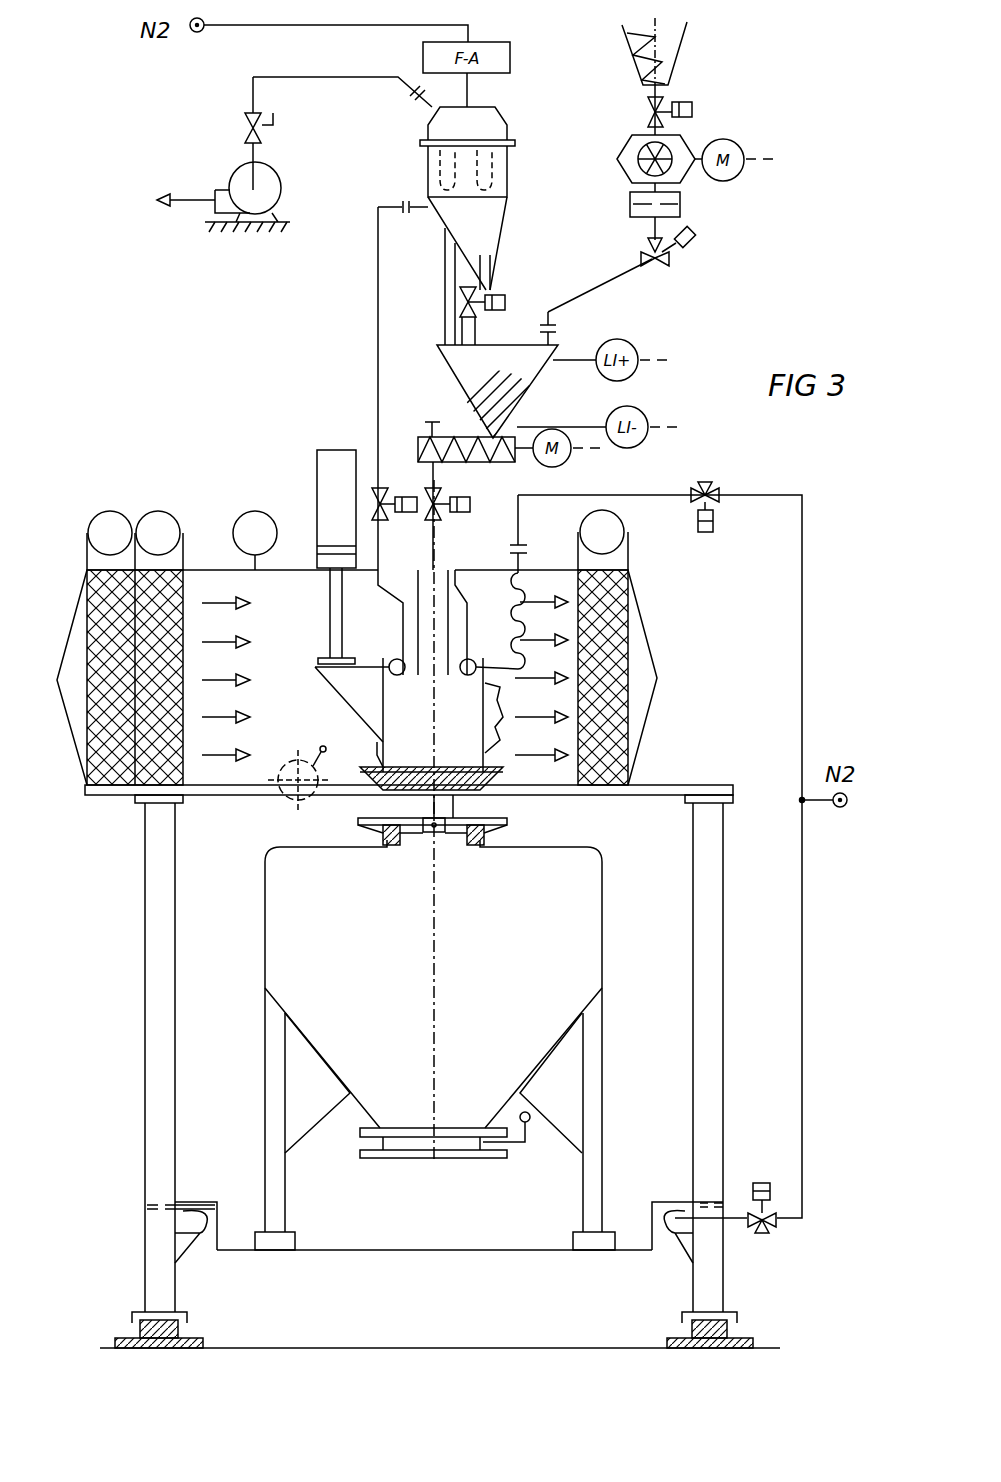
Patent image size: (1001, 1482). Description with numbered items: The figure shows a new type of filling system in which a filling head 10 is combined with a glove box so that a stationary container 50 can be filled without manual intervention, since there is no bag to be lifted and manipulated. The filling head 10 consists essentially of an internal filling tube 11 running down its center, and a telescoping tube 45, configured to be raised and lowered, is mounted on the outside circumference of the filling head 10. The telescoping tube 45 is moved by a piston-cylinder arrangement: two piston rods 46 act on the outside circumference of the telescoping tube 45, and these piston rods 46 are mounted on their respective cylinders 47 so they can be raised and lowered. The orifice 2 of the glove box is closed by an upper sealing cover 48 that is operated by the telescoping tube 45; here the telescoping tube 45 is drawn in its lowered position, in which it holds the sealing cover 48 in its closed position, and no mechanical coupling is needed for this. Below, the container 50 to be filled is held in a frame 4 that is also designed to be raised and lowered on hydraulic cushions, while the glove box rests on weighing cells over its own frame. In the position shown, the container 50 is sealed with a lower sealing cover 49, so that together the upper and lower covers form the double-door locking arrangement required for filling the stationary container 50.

The orifice 2 is at (455, 818).
The frame 4 is at (420, 1250).
The filling head 10 is at (322, 633).
The internal filling tube 11 is at (422, 642).
The telescoping tube 45 is at (382, 695).
The piston rods 46 is at (330, 580).
The cylinders 47 is at (327, 480).
The upper sealing cover 48 is at (422, 777).
The lower sealing cover 49 is at (423, 834).
The container 50 is at (580, 935).